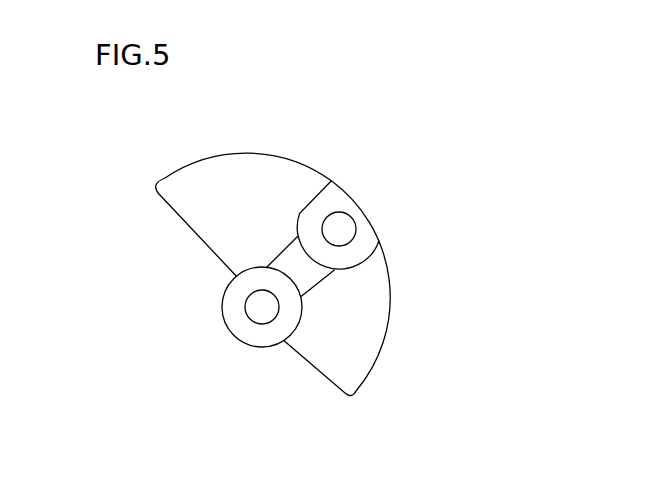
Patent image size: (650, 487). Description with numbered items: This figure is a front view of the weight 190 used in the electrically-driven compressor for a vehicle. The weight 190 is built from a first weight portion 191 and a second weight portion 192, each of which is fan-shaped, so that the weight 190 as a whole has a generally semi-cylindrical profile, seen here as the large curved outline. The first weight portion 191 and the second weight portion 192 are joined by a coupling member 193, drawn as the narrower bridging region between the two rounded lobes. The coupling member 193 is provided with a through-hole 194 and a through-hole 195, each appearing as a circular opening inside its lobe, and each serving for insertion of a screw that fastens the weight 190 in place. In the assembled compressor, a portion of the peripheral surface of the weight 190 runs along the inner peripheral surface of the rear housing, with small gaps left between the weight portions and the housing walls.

The weight 190 is at (378, 146).
The first weight portion 191 is at (247, 170).
The second weight portion 192 is at (375, 316).
The coupling member 193 is at (310, 276).
The through-hole 194 is at (260, 323).
The through-hole 195 is at (356, 227).